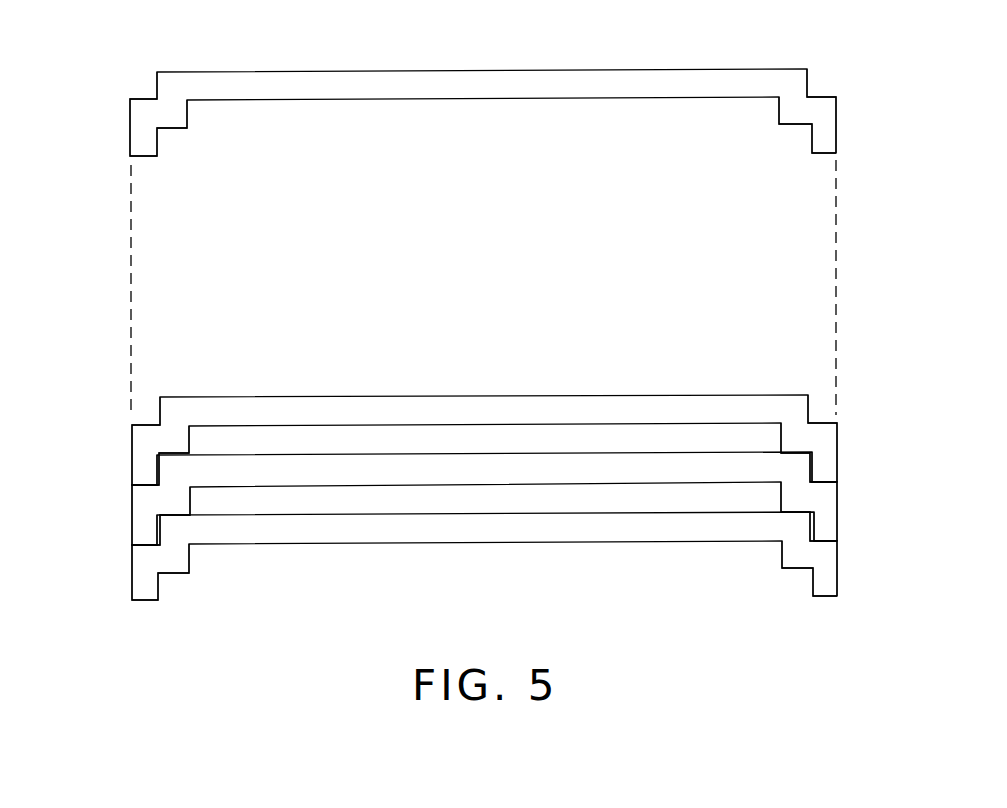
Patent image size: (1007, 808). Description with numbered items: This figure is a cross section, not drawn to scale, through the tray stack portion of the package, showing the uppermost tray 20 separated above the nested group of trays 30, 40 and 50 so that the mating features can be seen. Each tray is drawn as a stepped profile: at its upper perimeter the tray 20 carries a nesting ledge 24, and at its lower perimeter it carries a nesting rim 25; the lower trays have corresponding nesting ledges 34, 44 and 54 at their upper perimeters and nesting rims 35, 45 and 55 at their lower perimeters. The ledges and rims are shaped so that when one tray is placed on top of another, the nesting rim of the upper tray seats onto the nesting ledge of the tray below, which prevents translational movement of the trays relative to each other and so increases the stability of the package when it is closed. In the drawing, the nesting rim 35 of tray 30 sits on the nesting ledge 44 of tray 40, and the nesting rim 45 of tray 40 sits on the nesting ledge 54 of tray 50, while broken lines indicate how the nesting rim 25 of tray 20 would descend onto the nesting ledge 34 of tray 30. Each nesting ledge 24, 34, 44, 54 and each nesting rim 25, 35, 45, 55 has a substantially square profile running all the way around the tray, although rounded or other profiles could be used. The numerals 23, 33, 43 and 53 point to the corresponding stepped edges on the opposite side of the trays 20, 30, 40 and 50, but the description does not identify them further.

The uppermost tray 20 is at (451, 71).
The left stepped edge of top plate 23 is at (128, 120).
The nesting ledge 24 is at (818, 86).
The nesting rim 25 is at (822, 157).
The tray 30 is at (417, 405).
The left stepped edge of first plate 33 is at (130, 455).
The nesting ledge 34 is at (815, 422).
The nesting rim 35 is at (827, 477).
The tray 40 is at (490, 465).
The left stepped edge of second plate 43 is at (130, 516).
The nesting ledge 44 is at (833, 486).
The nesting rim 45 is at (822, 530).
The tray 50 is at (508, 535).
The left stepped edge of third plate 53 is at (130, 573).
The nesting ledge 54 is at (830, 546).
The nesting rim 55 is at (828, 598).